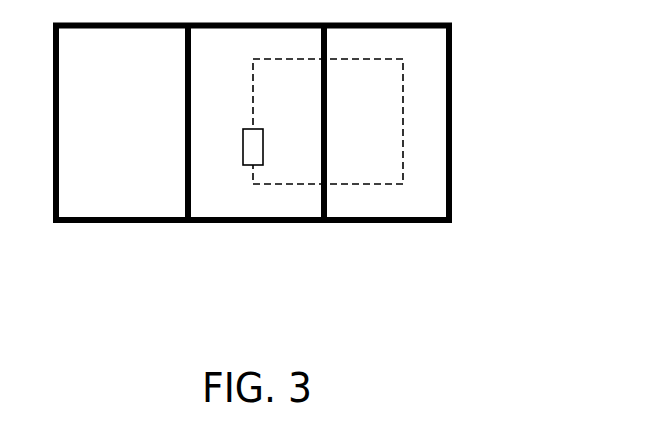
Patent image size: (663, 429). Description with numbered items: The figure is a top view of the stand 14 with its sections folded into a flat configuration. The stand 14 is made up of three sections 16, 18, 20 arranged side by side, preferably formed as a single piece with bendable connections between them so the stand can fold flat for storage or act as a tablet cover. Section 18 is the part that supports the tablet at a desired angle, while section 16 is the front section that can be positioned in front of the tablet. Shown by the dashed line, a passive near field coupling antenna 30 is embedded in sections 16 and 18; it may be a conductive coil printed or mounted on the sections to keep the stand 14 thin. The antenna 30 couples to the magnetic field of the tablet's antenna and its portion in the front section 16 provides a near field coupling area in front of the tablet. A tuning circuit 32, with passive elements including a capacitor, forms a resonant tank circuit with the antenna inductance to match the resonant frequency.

The stand 14 is at (476, 126).
The section 16 is at (402, 223).
The section 18 is at (253, 223).
The section 20 is at (110, 223).
The passive near field coupling antenna 30 is at (403, 83).
The tuning circuit 32 is at (243, 153).